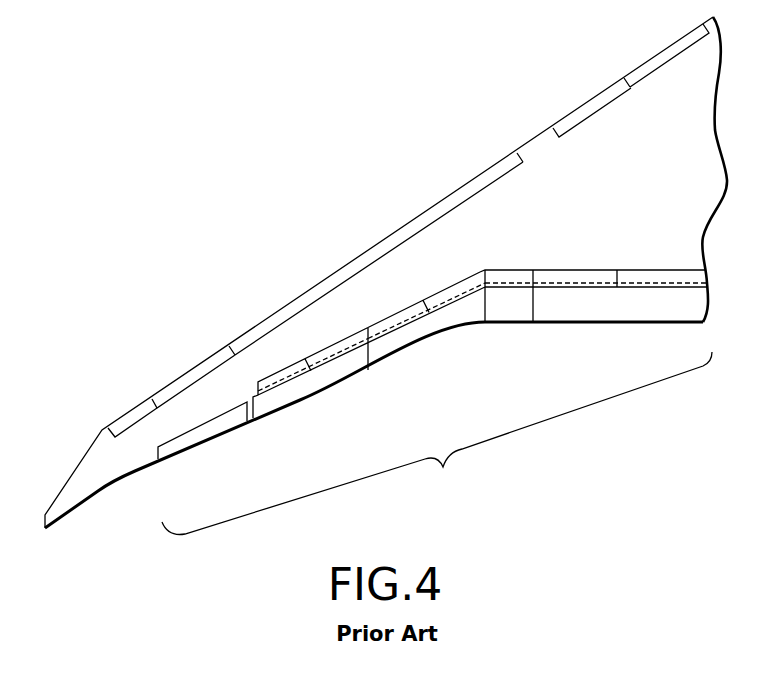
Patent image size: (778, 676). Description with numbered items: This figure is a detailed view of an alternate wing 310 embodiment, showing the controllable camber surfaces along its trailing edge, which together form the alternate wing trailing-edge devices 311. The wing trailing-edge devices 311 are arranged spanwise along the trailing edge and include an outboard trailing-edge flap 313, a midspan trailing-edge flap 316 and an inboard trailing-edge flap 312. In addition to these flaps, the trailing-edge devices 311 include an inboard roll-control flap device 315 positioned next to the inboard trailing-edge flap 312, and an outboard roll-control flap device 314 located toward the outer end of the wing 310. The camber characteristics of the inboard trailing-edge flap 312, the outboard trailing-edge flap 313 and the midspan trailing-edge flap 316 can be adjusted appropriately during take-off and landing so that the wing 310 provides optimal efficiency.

The wing 310 is at (207, 300).
The wing trailing edge devices 311 is at (437, 443).
The inboard trailing-edge flap 312 is at (617, 305).
The outboard trailing-edge flap 313 is at (322, 382).
The outboard roll-control flap device 314 is at (193, 438).
The inboard roll-control flap device 315 is at (503, 312).
The midspan trailing-edge flap 316 is at (417, 340).